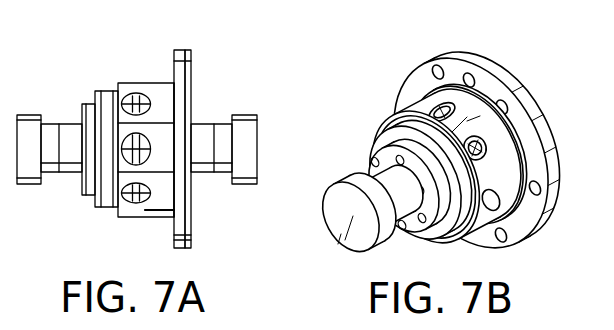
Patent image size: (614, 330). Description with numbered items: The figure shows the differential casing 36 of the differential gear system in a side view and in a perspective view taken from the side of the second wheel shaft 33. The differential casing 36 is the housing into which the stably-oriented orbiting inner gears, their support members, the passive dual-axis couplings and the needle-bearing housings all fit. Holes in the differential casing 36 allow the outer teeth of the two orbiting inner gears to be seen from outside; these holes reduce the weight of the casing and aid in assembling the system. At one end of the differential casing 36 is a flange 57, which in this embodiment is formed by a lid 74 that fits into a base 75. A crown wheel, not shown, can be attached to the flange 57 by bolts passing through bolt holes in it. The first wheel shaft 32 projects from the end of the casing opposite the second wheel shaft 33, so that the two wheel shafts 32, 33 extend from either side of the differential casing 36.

In FIG. 7A, the first wheel shaft 32 is at (208, 124).
In FIG. 7A, the second wheel shaft 33 is at (72, 124).
In FIG. 7B, the second wheel shaft 33 is at (372, 181).
In FIG. 7A, the differential casing 36 is at (127, 83).
In FIG. 7B, the differential casing 36 is at (391, 117).
In FIG. 7A, the flange 57 is at (173, 80).
In FIG. 7B, the flange 57 is at (427, 90).
In FIG. 7A, the lid 74 is at (193, 131).
In FIG. 7B, the lid 74 is at (477, 148).
In FIG. 7A, the base 75 is at (180, 50).
In FIG. 7B, the base 75 is at (470, 64).